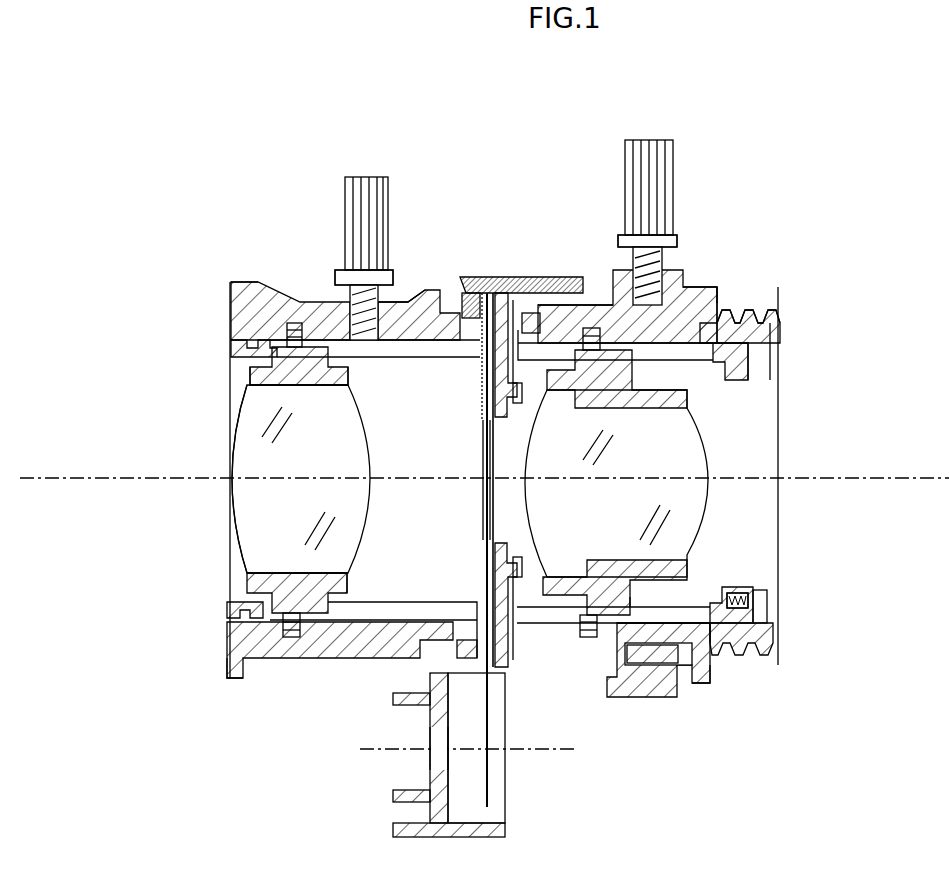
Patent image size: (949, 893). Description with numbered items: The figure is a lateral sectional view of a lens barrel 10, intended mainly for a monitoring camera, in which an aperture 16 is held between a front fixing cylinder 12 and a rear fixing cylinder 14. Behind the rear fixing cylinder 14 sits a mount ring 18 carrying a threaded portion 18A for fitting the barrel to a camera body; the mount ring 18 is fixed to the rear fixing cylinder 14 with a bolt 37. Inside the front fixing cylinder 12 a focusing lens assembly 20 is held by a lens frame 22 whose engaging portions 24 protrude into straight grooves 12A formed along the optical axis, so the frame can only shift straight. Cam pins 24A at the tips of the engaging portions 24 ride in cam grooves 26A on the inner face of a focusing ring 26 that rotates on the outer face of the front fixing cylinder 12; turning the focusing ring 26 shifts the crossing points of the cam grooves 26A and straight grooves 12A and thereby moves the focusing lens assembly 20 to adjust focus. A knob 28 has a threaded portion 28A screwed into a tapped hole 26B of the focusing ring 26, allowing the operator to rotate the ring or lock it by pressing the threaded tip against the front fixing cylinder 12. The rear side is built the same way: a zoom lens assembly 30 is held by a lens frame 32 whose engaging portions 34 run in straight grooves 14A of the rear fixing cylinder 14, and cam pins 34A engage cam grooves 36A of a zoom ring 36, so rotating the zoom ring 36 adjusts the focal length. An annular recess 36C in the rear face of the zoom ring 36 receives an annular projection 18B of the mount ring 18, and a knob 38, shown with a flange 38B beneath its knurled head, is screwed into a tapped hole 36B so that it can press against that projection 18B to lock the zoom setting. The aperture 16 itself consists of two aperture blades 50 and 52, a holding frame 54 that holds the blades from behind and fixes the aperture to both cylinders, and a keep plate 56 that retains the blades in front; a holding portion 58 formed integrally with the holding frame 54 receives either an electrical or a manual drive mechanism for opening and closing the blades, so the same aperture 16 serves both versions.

The lens barrel 10 is at (132, 193).
The front fixing cylinder 12 is at (458, 283).
The straight grooves 12A is at (377, 348).
The rear fixing cylinder 14 is at (750, 352).
The straight grooves 14A is at (700, 372).
The aperture mechanism 16 is at (470, 451).
The mount ring 18 is at (780, 330).
The threaded portion 18A is at (768, 316).
The annular projection 18B is at (727, 295).
The focusing lens assembly 20 is at (263, 467).
The lens frame 22 is at (240, 400).
The engaging portions 24 is at (262, 372).
The cam pins 24A is at (286, 330).
The focusing ring 26 is at (305, 298).
The cam grooves 26A is at (245, 300).
The tapped hole 26B is at (400, 300).
The knob 28 is at (368, 182).
The threaded portion 28A is at (352, 300).
The zoom lens assembly 30 is at (628, 484).
The lens frame 32 is at (650, 410).
The engaging portions 34 is at (605, 355).
The cam pins 34A is at (543, 290).
The zoom ring 36 is at (603, 300).
The cam grooves 36A is at (548, 288).
The tapped hole 36B is at (687, 290).
The annular recess 36C is at (715, 310).
The bolt 37 is at (762, 604).
The knob 38 is at (643, 145).
The screw flange 38B is at (645, 242).
The aperture blade 50 is at (482, 482).
The aperture blade 52 is at (486, 512).
The holding frame 54 is at (486, 340).
The keep plate 56 is at (496, 370).
The holding portion 58 is at (418, 762).